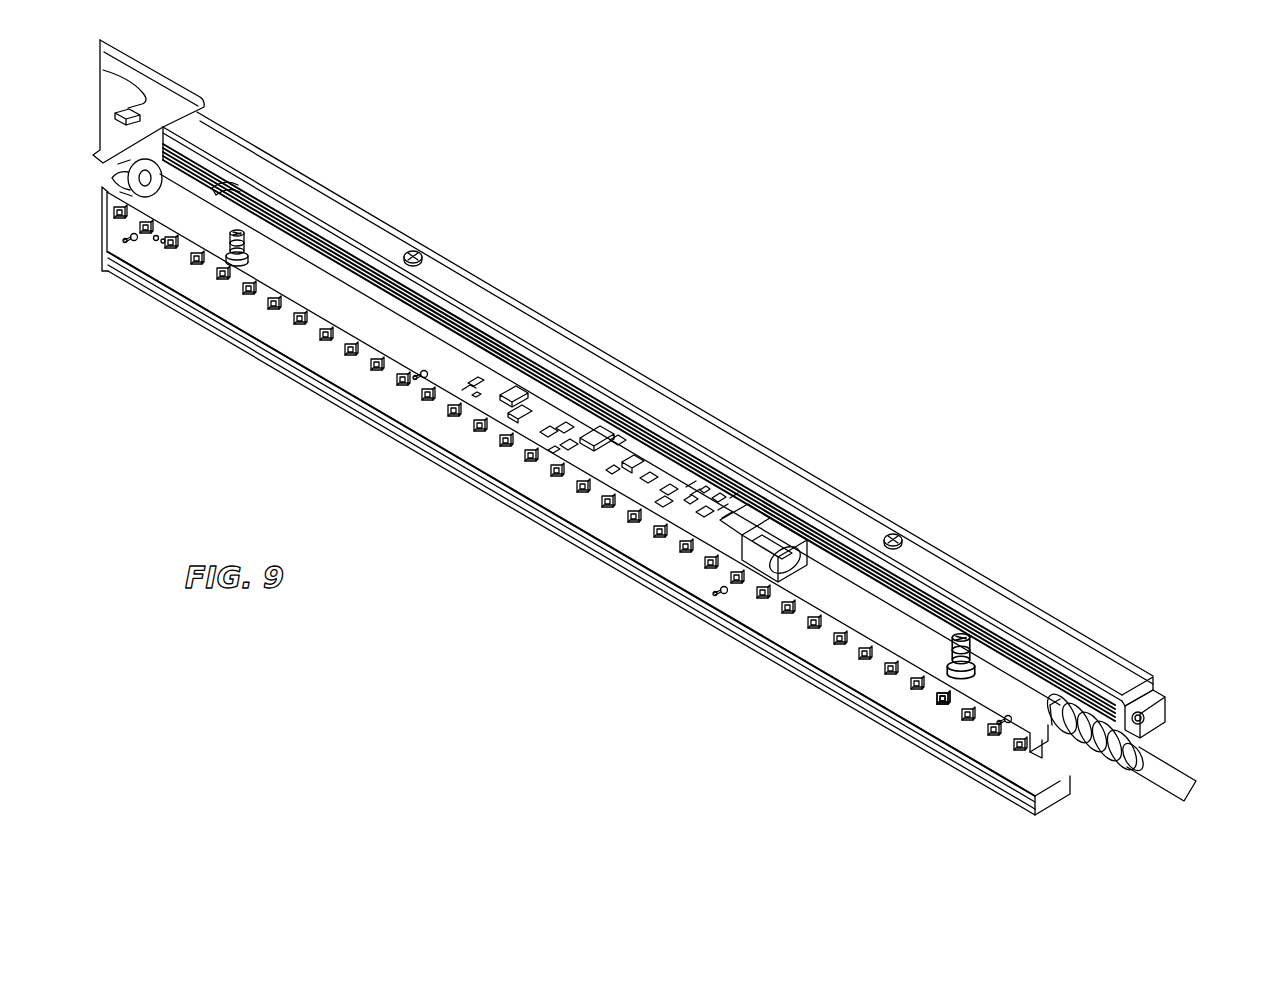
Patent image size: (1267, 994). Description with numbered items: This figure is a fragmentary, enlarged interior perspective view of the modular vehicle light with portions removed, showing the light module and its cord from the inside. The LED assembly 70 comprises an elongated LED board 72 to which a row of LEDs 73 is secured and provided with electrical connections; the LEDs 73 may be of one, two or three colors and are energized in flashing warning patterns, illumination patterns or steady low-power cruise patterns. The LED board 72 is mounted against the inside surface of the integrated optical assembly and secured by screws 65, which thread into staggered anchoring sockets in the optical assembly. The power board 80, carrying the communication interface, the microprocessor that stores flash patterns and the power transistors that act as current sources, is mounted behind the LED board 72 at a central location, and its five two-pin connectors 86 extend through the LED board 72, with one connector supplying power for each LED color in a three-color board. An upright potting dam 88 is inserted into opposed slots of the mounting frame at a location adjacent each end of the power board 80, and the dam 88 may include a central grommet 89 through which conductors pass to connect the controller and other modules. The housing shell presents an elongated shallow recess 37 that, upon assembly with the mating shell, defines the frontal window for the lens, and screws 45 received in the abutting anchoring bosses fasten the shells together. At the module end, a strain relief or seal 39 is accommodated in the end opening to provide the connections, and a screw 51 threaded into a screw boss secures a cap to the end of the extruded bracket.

The elongated shallow recess 37 is at (1000, 790).
The seal 39 is at (1105, 695).
The screws 45 is at (239, 232).
The screw 51 is at (1147, 718).
The screws 65 is at (133, 244).
The LED assembly 70 is at (860, 665).
The LED board 72 is at (940, 705).
The LEDs 73 is at (275, 312).
The power board 80 is at (592, 430).
The two-pin connectors 86 is at (470, 412).
The potting dam 88 is at (800, 535).
The grommet 89 is at (790, 556).